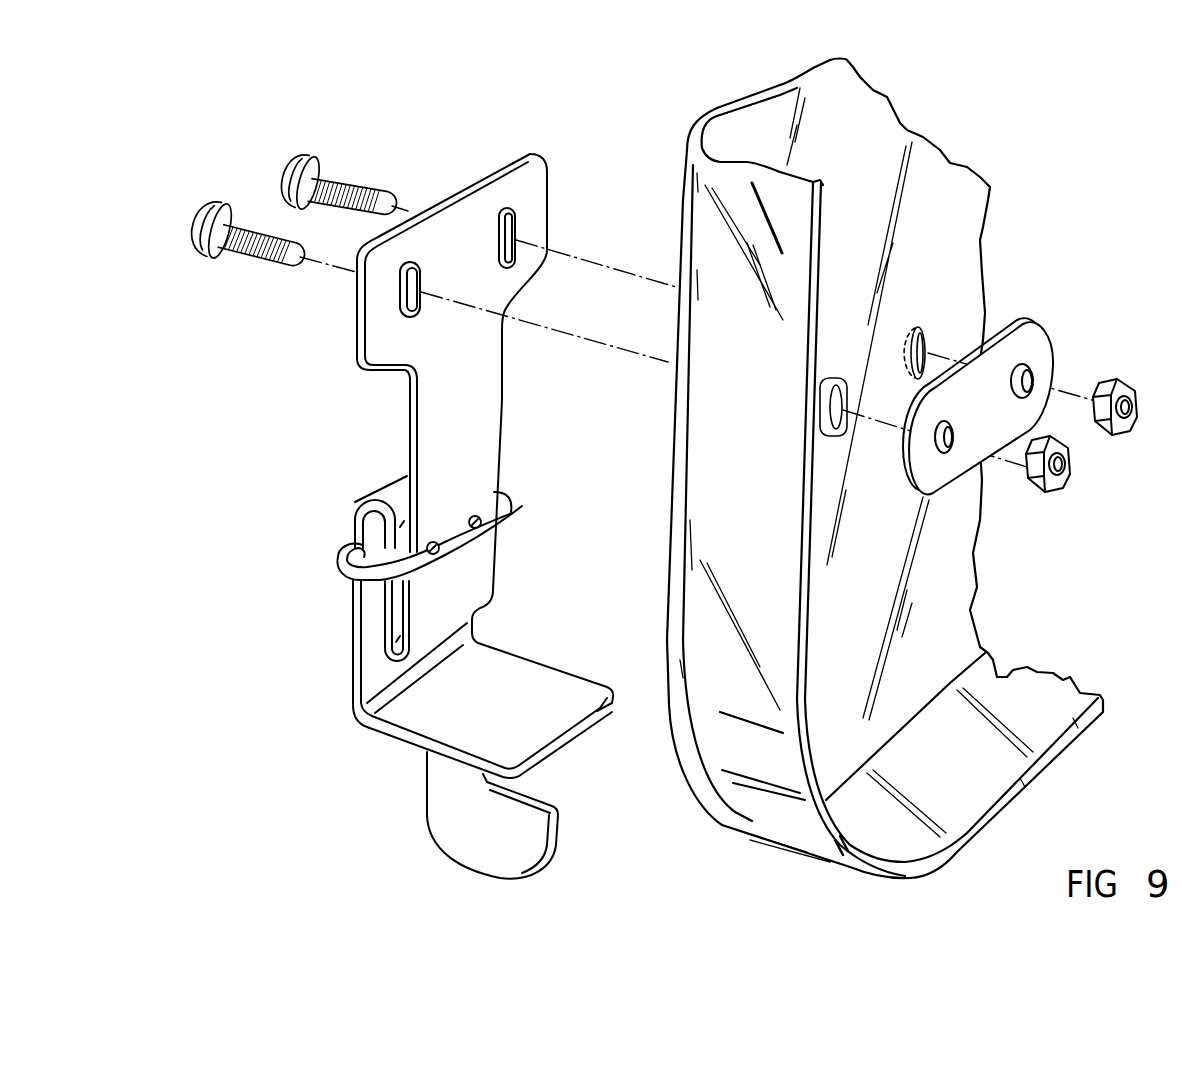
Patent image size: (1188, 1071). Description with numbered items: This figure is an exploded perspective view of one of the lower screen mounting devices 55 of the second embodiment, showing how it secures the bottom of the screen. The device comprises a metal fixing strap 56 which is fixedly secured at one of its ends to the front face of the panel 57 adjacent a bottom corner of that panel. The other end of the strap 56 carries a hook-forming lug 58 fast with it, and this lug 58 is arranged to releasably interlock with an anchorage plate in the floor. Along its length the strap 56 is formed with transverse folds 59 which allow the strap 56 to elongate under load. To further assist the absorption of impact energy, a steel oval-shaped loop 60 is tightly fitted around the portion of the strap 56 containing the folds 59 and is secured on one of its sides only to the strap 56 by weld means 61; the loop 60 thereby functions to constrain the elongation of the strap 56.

The lower screen mounting device 55 is at (592, 170).
The fixing strap 56 is at (483, 403).
The panel 57 is at (1035, 687).
The hook-forming lug 58 is at (463, 808).
The transverse folds 59 is at (383, 497).
The oval-shaped loop 60 is at (503, 503).
The weld means 61 is at (433, 548).